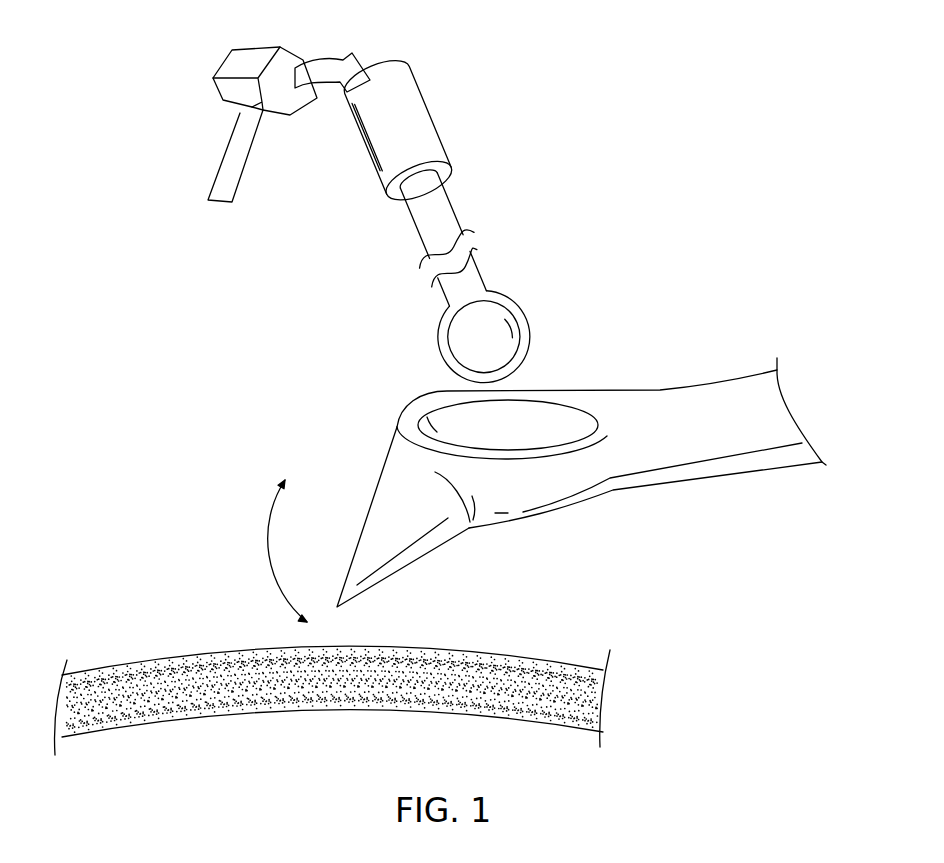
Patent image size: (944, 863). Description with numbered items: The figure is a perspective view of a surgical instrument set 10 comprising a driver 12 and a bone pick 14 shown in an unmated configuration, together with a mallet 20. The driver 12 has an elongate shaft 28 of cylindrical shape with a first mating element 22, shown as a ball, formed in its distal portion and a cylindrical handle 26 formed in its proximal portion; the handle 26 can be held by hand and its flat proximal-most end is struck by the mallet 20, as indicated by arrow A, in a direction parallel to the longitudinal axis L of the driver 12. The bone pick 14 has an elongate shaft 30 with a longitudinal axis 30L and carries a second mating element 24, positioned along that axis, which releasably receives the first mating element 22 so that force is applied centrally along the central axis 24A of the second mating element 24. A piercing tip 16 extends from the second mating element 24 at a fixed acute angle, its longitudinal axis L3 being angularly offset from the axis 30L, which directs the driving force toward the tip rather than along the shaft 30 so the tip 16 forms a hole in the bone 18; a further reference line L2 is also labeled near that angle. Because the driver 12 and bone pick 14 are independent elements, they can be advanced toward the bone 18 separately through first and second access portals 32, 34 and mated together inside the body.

The surgical instrument set 10 is at (554, 291).
The driver 12 is at (438, 225).
The bone pick 14 is at (601, 444).
The piercing tip 16 is at (375, 530).
The bone 18 is at (510, 658).
The mallet 20 is at (230, 137).
The first mating element 22 is at (463, 342).
The second mating element 24 is at (546, 412).
The central axis 24A is at (498, 527).
The handle 26 is at (432, 108).
The elongate shaft 28 is at (473, 267).
The bone pick shaft 30 is at (678, 387).
The longitudinal axis of bone pick shaft 30L is at (807, 408).
The first access portal 32 is at (476, 200).
The second access portal 34 is at (787, 339).
The arrow A is at (336, 104).
The longitudinal axis of driver L is at (382, 63).
The reference line L2 is at (380, 460).
The longitudinal axis of piercing tip L3 is at (337, 607).